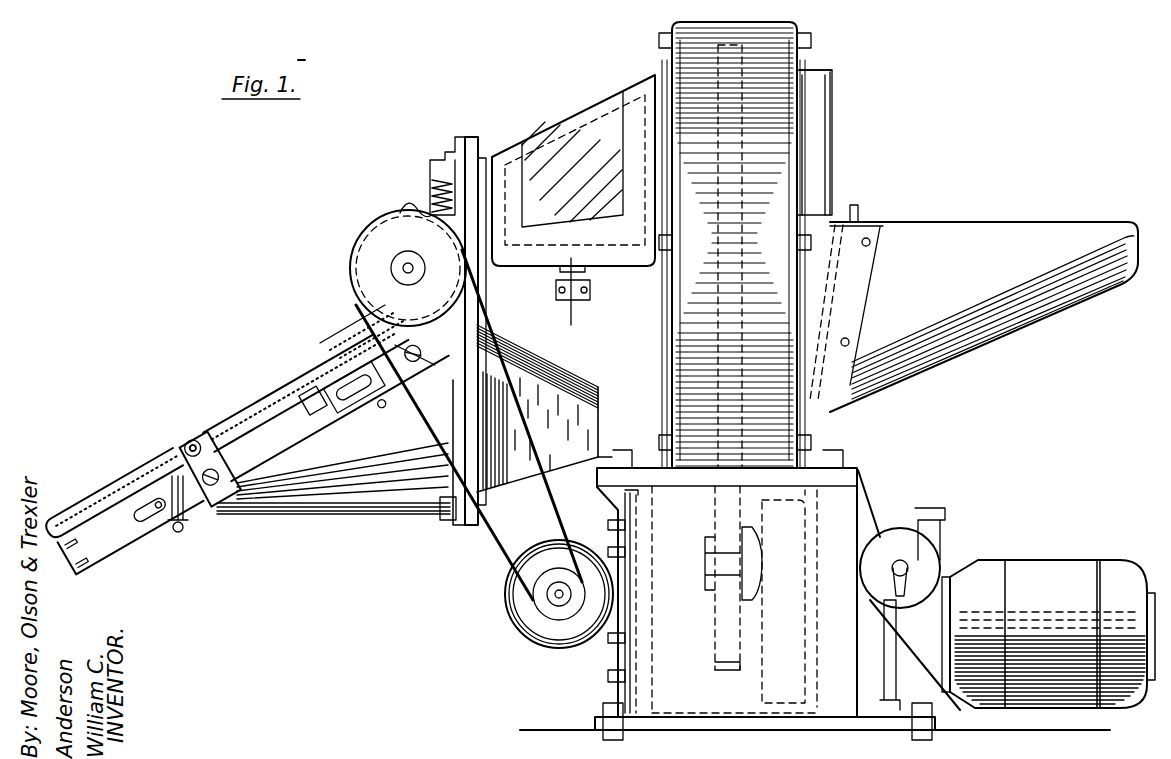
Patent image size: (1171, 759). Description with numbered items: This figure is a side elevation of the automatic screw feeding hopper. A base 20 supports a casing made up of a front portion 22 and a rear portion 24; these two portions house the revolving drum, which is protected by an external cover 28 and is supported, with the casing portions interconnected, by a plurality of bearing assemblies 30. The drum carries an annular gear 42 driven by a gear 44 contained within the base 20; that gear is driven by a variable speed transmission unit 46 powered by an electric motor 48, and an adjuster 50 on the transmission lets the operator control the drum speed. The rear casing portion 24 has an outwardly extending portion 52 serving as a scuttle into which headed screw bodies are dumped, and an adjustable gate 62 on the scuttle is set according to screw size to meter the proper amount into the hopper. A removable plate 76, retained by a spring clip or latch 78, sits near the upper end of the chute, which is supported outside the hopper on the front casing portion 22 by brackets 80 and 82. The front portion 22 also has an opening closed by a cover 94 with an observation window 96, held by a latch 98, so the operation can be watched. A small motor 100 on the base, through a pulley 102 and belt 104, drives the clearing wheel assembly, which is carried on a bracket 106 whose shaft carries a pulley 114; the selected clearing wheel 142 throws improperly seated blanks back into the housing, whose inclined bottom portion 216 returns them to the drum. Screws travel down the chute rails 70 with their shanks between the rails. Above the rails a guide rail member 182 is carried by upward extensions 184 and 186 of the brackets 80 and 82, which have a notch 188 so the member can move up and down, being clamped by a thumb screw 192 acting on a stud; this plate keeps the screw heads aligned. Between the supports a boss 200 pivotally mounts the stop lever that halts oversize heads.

The base 20 is at (820, 498).
The front casing portion 22 is at (656, 78).
The rear casing portion 24 is at (818, 100).
The external cover 28 is at (795, 28).
The bearing assemblies 30 is at (814, 42).
The annular gear 42 is at (733, 178).
The gear 44 is at (718, 625).
The variable speed transmission unit 46 is at (852, 502).
The electric motor 48 is at (1030, 575).
The adjuster 50 is at (922, 556).
The scuttle 52 is at (1010, 222).
The adjustable gate 62 is at (860, 206).
The chute rails 70 is at (149, 509).
The removable plate 76 is at (834, 125).
The spring clip or latch 78 is at (832, 72).
The bracket 80 is at (275, 505).
The bracket 82 is at (433, 377).
The cover 94 is at (515, 148).
The observation window 96 is at (580, 126).
The latch or fastening means 98 is at (588, 298).
The small motor 100 is at (518, 598).
The pulley 102 is at (550, 610).
The belt 104 is at (500, 545).
The bracket 106 is at (466, 335).
The pulley 114 is at (368, 256).
The clearing wheel 142 is at (412, 200).
The guide and guide rail member 182 is at (123, 512).
The upward extension 184 is at (208, 469).
The upward extension 186 is at (385, 324).
The notch 188 is at (413, 353).
The thumb screw 192 is at (190, 440).
The boss or bracket 200 is at (346, 398).
The inclined bottom portion 216 is at (583, 376).